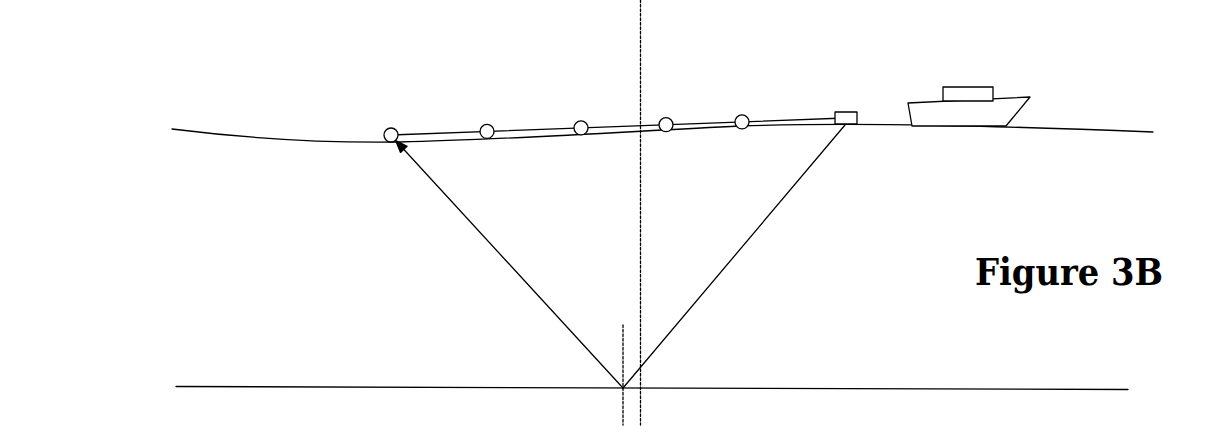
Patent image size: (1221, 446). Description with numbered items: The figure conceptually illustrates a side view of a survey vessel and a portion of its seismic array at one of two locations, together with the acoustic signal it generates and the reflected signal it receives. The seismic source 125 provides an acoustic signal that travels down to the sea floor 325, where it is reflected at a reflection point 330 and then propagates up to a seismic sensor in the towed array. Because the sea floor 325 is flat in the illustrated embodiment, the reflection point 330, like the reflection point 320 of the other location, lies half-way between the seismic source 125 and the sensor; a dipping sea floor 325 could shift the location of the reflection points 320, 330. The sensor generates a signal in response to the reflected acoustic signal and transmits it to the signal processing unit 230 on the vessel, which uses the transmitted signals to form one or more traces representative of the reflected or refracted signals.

The seismic source 125 is at (848, 111).
The signal processing unit 230 is at (951, 85).
The reflection point 320 is at (652, 396).
The sea floor 325 is at (418, 387).
The reflection point 330 is at (612, 396).